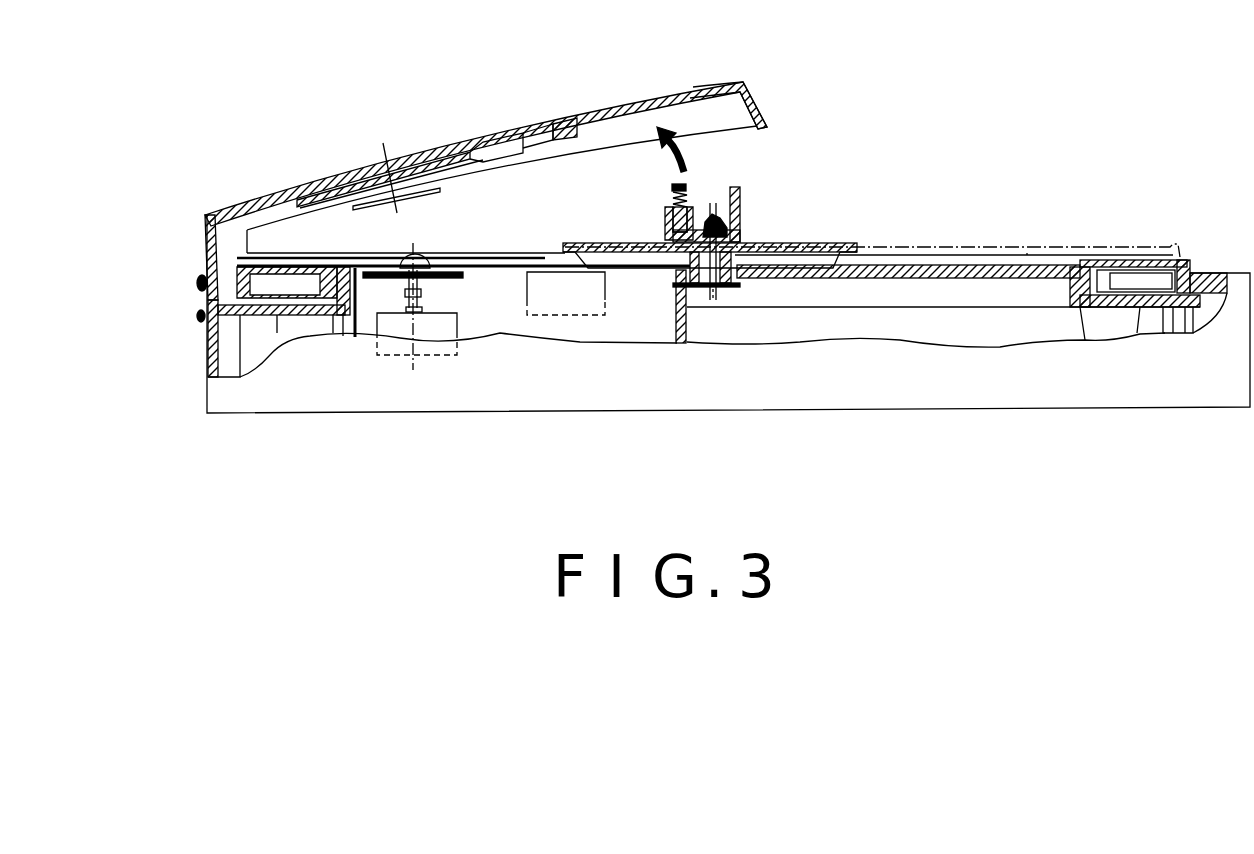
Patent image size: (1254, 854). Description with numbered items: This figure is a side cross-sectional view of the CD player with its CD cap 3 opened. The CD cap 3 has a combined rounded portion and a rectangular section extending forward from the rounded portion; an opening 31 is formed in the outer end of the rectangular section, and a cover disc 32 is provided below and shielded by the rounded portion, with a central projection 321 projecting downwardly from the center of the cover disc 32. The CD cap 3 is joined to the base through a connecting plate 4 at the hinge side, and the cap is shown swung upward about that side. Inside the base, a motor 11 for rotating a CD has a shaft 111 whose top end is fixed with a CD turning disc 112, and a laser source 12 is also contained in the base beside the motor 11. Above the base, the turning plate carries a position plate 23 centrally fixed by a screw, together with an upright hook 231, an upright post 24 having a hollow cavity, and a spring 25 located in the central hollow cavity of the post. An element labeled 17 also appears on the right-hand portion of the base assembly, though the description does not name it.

The CD cap 3 is at (205, 253).
The opening 31 is at (693, 87).
The cover disc 32 is at (393, 213).
The central projection 321 is at (393, 210).
The connecting plate 4 is at (205, 307).
The top plate 17 is at (1027, 253).
The position plate 23 is at (740, 217).
The upright hook 231 is at (740, 190).
The upright post 24 is at (667, 227).
The spring 25 is at (683, 185).
The motor 11 is at (440, 350).
The shaft 111 is at (463, 278).
The CD turning disc 112 is at (393, 273).
The laser source 12 is at (570, 300).